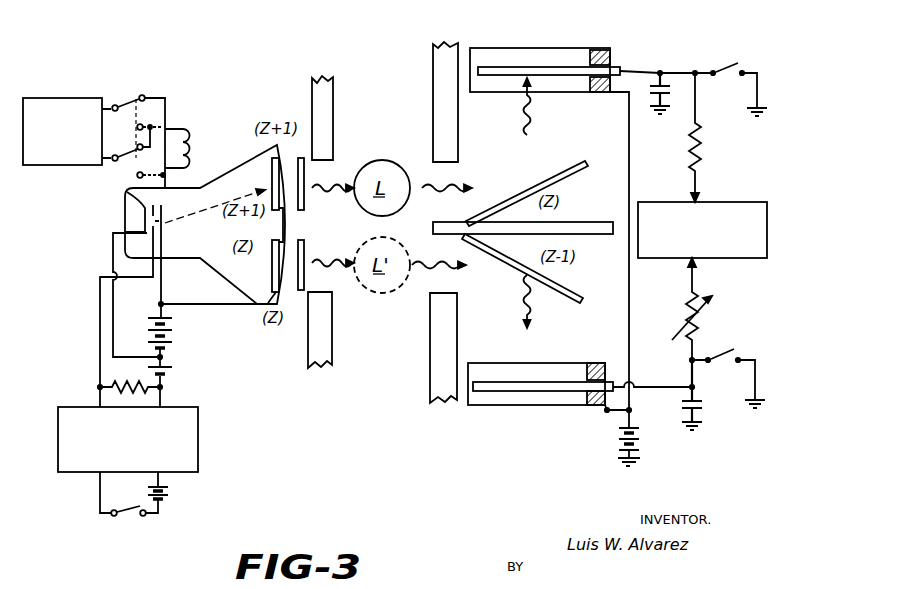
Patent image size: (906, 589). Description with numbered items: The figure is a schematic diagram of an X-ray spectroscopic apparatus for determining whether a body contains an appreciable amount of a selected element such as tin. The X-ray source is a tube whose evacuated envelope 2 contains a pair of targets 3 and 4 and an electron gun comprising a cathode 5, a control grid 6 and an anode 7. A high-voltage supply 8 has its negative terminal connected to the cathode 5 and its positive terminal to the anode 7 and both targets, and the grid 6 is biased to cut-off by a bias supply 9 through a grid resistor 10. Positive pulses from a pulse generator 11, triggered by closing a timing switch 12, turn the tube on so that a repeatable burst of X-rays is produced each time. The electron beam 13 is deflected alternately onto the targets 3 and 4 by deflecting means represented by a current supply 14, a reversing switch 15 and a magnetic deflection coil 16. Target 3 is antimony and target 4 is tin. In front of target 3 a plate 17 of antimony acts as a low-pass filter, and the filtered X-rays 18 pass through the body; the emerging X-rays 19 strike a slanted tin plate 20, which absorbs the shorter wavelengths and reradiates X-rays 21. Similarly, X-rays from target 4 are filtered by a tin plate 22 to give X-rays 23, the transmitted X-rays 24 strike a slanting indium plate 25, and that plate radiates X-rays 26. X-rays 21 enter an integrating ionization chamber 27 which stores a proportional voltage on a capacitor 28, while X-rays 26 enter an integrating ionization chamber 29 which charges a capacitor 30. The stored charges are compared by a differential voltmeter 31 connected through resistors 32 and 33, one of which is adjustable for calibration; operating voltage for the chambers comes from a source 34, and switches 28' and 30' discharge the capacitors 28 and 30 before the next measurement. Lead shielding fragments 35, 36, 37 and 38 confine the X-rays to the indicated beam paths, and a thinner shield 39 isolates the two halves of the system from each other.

The evacuated envelope 2 is at (242, 151).
The target 3 is at (271, 173).
The target 4 is at (271, 279).
The cathode 5 is at (127, 223).
The control grid 6 is at (126, 192).
The anode 7 is at (158, 208).
The high-voltage supply 8 is at (176, 333).
The bias supply 9 is at (176, 379).
The grid resistor 10 is at (123, 382).
The pulse generator 11 is at (196, 417).
The timing switch 12 is at (119, 519).
The electron beam 13 is at (225, 208).
The current supply 14 is at (68, 98).
The reversing switch 15 is at (133, 96).
The magnetic deflection coil 16 is at (194, 132).
The plate 17 is at (304, 208).
The filtered X-rays 18 is at (344, 178).
The emerging X-rays 19 is at (434, 188).
The plate 20 is at (572, 164).
The reradiated X-rays 21 is at (520, 142).
The plate 22 is at (304, 244).
The filtered X-rays 23 is at (318, 274).
The transmitted X-rays 24 is at (430, 273).
The slanting plate 25 is at (570, 280).
The radiated X-rays 26 is at (518, 312).
The integrating ionization chamber 27 is at (548, 50).
The capacitor 28 is at (665, 106).
The switch 28' is at (739, 76).
The integrating ionization chamber 29 is at (538, 363).
The capacitor 30 is at (706, 395).
The switch 30' is at (727, 358).
The differential voltmeter 31 is at (754, 190).
The resistor 32 is at (703, 143).
The resistor 33 is at (708, 325).
The source 34 is at (610, 447).
The shielding 35 is at (331, 96).
The shielding 36 is at (309, 355).
The shielding 37 is at (433, 101).
The shielding 38 is at (430, 355).
The shield 39 is at (600, 223).